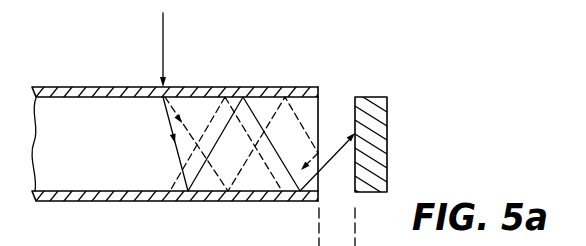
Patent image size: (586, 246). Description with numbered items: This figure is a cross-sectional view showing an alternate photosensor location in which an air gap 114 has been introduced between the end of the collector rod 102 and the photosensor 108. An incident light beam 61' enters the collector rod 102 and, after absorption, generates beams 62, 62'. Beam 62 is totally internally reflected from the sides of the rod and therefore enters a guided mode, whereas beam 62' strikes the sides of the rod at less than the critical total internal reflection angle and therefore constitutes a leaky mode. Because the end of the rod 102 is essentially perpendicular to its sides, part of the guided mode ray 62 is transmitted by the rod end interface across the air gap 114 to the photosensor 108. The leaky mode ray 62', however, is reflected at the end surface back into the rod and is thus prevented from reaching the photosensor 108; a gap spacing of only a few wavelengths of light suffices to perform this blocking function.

The collector rod 102 is at (63, 86).
The incident light beam 61' is at (181, 50).
The leaky mode beam 62' is at (259, 124).
The guided mode beam 62 is at (222, 144).
The air gap 114 is at (382, 68).
The photosensor 108 is at (382, 112).